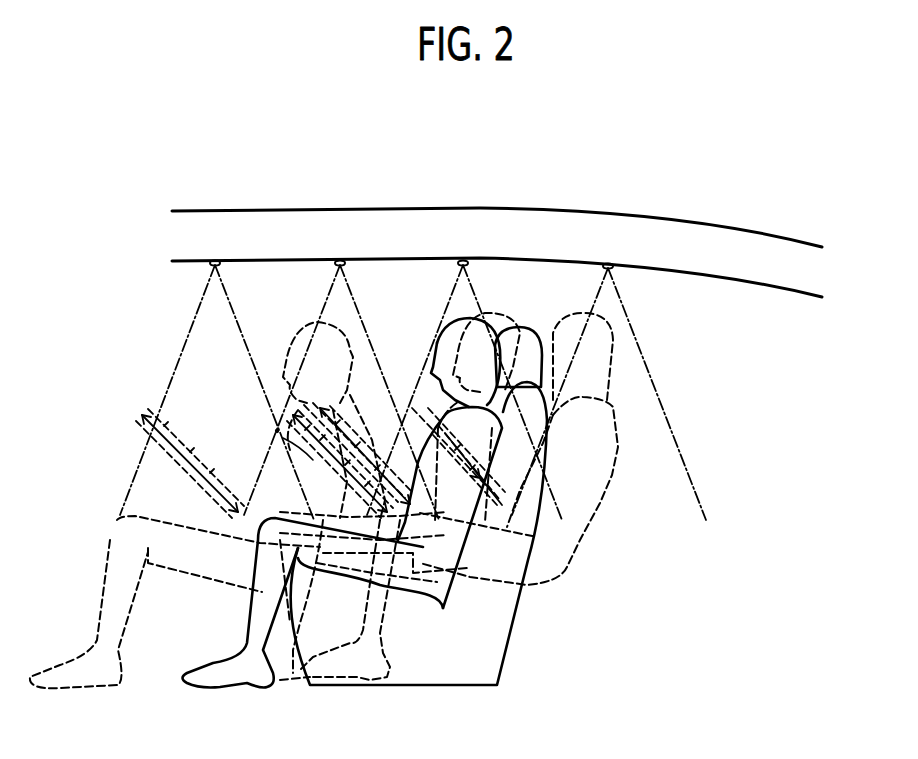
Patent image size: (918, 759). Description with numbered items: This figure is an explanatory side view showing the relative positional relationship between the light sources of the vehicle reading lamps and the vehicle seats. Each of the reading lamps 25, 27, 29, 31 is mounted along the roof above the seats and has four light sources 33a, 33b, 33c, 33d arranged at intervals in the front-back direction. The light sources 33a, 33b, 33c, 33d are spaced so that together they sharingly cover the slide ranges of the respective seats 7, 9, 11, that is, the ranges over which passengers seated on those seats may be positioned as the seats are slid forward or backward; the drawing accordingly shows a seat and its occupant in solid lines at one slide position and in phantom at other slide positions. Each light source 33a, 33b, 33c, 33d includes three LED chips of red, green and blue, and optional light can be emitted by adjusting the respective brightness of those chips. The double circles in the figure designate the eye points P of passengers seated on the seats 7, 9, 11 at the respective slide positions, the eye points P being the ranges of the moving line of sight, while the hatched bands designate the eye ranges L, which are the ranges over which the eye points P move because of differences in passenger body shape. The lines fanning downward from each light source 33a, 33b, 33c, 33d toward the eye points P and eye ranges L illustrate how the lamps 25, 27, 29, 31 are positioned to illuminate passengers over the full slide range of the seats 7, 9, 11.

The reading lamp 25 is at (532, 278).
The reading lamp 27 is at (532, 278).
The reading lamp 29 is at (532, 278).
The reading lamp 31 is at (668, 300).
The light source 33a is at (217, 263).
The light source 33b is at (342, 263).
The light source 33c is at (465, 263).
The light source 33d is at (610, 266).
The seat 7 is at (462, 506).
The seat 9 is at (462, 506).
The seat 11 is at (493, 642).
The eye point P is at (276, 431).
The eye range L is at (323, 438).